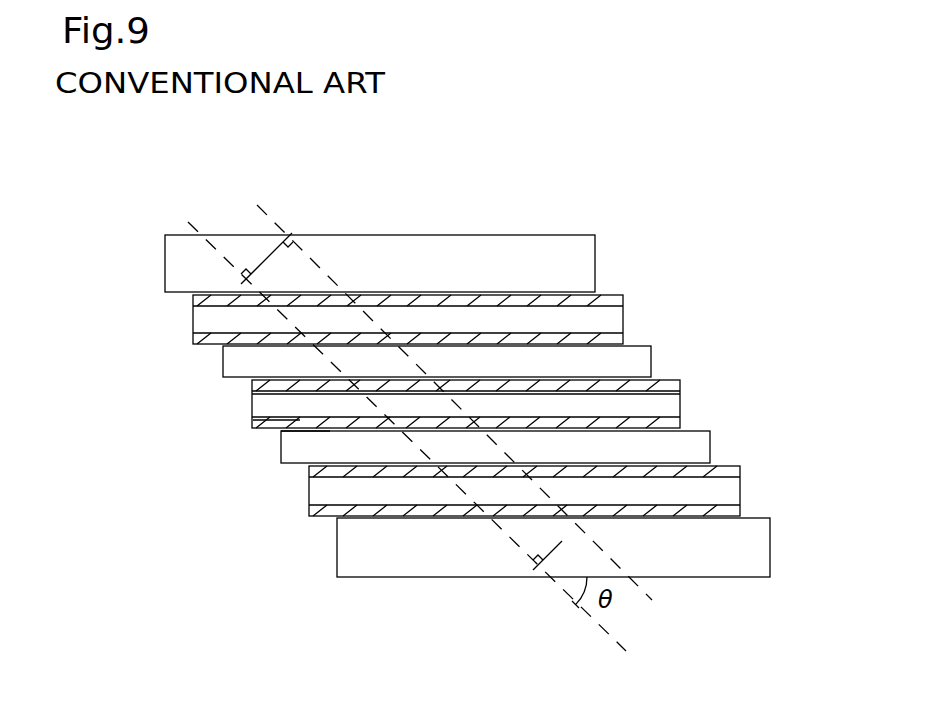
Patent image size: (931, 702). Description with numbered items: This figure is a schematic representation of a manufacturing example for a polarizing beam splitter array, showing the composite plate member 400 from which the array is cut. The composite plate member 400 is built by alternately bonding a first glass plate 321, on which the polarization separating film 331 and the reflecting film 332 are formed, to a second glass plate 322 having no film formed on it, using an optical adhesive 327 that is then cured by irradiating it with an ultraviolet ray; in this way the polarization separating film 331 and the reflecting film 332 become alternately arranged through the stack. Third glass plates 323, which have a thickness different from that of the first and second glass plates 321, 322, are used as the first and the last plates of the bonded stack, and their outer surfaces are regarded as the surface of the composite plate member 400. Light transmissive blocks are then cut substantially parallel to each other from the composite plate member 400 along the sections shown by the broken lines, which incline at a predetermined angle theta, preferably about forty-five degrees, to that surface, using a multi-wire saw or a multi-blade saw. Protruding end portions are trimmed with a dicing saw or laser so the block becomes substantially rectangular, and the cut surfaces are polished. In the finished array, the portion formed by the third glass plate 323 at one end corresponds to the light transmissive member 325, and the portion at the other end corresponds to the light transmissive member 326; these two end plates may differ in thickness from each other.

The composite plate member 400 is at (580, 129).
The first glass plate 321 is at (610, 318).
The second glass plate 322 is at (638, 364).
The third glass plate 323 is at (582, 278).
The light transmissive member 325 is at (549, 541).
The light transmissive member 326 is at (283, 268).
The optical adhesive 327 is at (302, 440).
The polarization separating film 331 is at (272, 424).
The reflecting film 332 is at (272, 396).